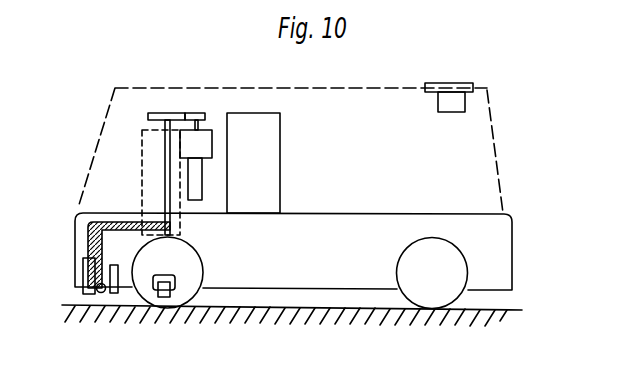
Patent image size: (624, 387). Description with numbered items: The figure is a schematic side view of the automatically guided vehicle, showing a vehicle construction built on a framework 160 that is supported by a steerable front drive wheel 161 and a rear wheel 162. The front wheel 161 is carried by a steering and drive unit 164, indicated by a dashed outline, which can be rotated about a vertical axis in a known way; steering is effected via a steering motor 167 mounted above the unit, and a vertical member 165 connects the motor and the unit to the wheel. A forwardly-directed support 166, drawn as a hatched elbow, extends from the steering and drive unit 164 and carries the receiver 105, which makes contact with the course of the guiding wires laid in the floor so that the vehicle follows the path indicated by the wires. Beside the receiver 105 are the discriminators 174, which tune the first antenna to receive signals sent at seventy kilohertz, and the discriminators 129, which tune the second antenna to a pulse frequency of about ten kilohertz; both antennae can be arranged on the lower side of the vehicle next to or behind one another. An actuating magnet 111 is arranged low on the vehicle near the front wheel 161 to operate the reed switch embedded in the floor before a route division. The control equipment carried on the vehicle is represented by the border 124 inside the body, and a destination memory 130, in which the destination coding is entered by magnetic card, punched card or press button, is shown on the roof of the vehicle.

The receiver 105 is at (85, 295).
The actuating magnet 111 is at (167, 298).
The border 124 is at (266, 163).
The discriminators 129 is at (112, 295).
The destination memory 130 is at (452, 88).
The framework 160 is at (500, 235).
The steerable front drive wheel 161 is at (195, 270).
The rear wheel 162 is at (455, 265).
The steering and drive unit 164 is at (147, 163).
The shaft 165 is at (165, 203).
The forwardly-directed support 166 is at (90, 238).
The steering motor 167 is at (205, 137).
The discriminators 174 is at (101, 293).